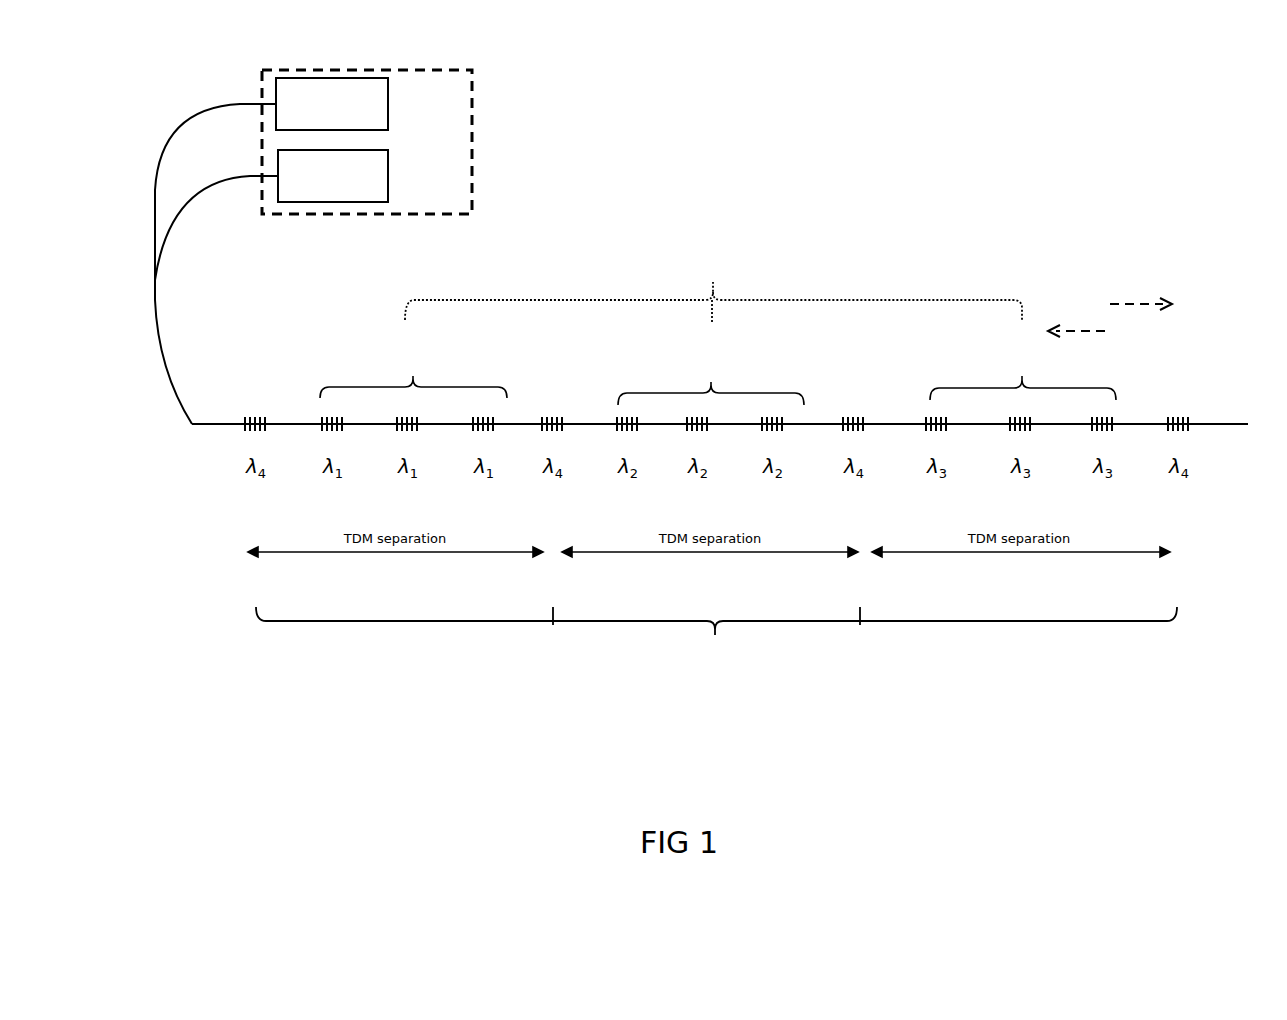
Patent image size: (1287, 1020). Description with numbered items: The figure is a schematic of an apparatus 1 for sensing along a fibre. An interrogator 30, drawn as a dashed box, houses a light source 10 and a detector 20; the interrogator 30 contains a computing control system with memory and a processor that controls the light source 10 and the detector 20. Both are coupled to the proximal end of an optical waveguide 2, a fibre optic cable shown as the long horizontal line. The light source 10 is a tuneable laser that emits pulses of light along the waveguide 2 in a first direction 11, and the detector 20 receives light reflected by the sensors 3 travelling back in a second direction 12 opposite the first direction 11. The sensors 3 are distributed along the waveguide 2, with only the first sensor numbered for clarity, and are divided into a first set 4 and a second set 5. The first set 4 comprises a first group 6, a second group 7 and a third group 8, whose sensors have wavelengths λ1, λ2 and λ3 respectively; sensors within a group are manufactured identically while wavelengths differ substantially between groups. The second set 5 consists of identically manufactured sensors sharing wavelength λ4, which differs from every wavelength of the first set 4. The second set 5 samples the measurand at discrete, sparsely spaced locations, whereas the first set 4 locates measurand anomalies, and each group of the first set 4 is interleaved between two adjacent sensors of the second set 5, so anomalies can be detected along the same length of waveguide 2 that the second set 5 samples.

The apparatus 1 is at (1064, 159).
The optical waveguide 2 is at (212, 424).
The sensors 3 is at (258, 424).
The first set 4 is at (713, 287).
The second set 5 is at (716, 641).
The first group 6 is at (413, 387).
The second group 7 is at (710, 387).
The third group 8 is at (1021, 387).
The light source 10 is at (271, 134).
The first direction 11 is at (1141, 291).
The second direction 12 is at (1076, 319).
The detector 20 is at (271, 215).
The interrogator 30 is at (367, 142).